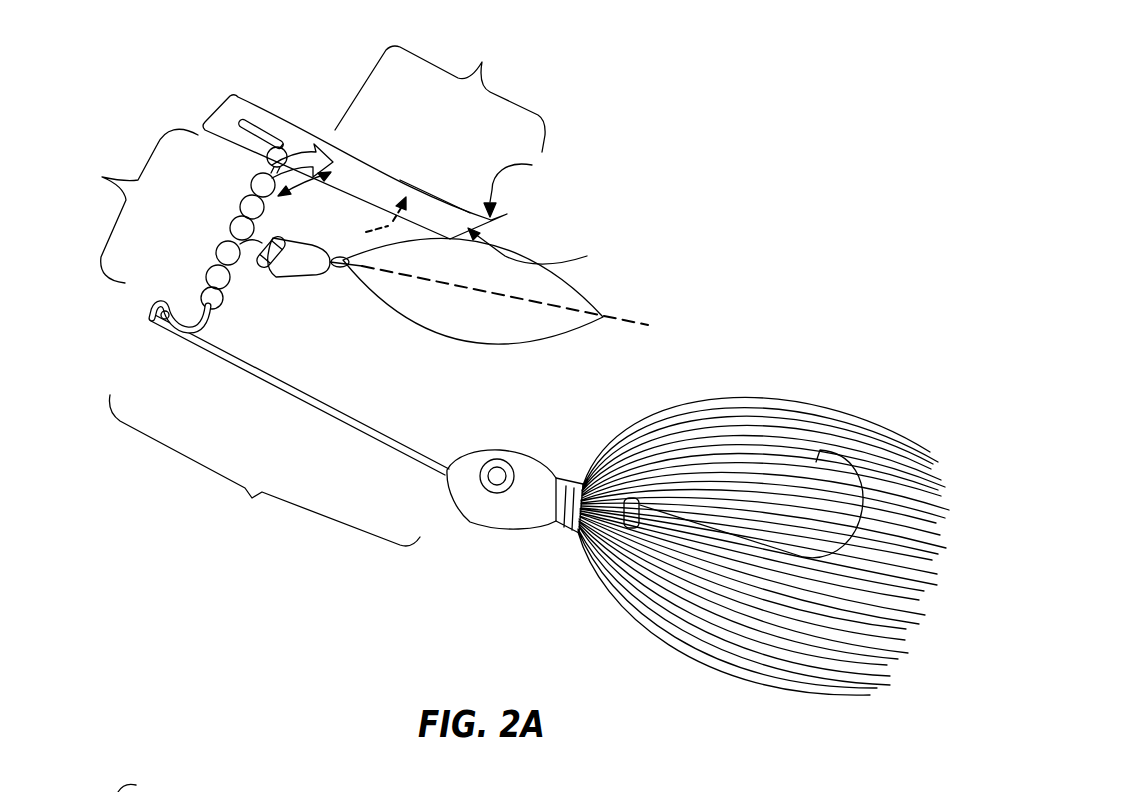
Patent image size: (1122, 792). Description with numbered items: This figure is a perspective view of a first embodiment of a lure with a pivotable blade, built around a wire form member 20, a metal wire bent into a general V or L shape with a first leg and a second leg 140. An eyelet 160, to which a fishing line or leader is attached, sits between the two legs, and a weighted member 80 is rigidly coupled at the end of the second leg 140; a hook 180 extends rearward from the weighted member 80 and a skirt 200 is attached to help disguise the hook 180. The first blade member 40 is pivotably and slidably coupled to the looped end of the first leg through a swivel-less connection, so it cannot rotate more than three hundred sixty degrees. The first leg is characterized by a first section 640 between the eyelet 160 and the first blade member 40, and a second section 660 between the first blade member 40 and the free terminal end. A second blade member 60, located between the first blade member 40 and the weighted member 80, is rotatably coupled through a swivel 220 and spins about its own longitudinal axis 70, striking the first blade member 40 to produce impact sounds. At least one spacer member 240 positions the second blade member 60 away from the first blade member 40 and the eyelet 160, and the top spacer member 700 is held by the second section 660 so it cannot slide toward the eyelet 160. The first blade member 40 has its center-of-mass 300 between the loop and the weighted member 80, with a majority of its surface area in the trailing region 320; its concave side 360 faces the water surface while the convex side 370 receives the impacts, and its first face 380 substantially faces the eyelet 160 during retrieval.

The wire form member 20 is at (249, 366).
The first blade member 40 is at (422, 209).
The second blade member 60 is at (463, 330).
The longitudinal axis 70 is at (628, 319).
The weighted member 80 is at (524, 472).
The second leg 140 is at (264, 470).
The eyelet 160 is at (165, 317).
The hook 180 is at (752, 542).
The skirt 200 is at (598, 558).
The swivel 220 is at (292, 260).
The spacer member 240 is at (251, 185).
The center-of-mass 300 is at (343, 178).
The trailing region 320 is at (374, 132).
The concave side 360 is at (530, 185).
The convex side 370 is at (550, 249).
The first face 380 is at (363, 221).
The first section 640 is at (127, 206).
The second section 660 is at (306, 195).
The top spacer member 700 is at (266, 156).